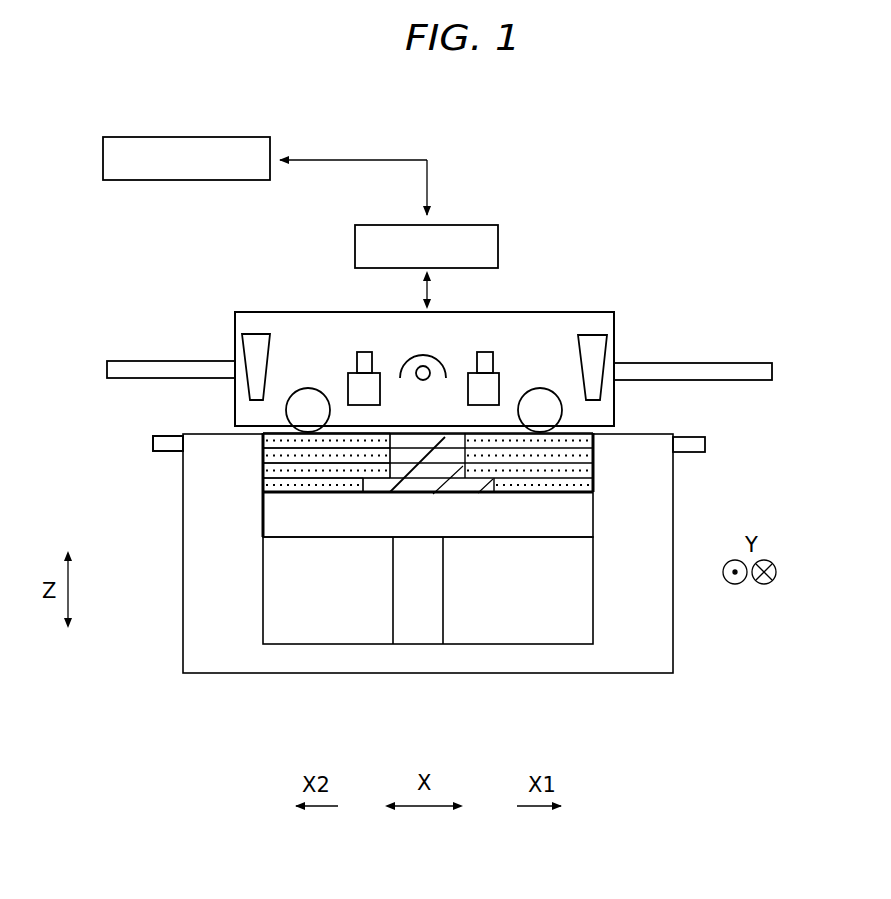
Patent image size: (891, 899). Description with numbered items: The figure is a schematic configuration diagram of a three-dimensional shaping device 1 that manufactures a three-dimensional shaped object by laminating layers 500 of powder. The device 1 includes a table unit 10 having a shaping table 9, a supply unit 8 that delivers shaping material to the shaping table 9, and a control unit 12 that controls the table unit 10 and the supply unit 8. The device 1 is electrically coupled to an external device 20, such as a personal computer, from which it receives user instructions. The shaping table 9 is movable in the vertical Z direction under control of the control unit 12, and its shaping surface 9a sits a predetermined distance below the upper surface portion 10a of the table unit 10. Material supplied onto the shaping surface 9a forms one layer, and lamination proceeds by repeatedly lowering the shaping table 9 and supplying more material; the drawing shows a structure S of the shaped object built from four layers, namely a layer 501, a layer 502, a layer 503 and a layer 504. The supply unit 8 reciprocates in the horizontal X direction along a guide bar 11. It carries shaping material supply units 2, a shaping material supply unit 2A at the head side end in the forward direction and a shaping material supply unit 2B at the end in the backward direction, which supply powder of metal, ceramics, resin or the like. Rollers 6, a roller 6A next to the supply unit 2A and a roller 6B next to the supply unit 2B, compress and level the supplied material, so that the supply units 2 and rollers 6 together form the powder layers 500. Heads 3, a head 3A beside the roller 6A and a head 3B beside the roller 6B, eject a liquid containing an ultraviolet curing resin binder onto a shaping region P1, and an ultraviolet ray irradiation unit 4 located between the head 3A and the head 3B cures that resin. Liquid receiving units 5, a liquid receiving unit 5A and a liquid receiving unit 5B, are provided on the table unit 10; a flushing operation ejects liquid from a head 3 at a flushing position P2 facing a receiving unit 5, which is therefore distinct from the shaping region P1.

The three-dimensional shaping device 1 is at (805, 305).
The external device 20 is at (150, 137).
The control unit 12 is at (483, 225).
The supply unit 8 is at (235, 322).
The guide bar 11 is at (712, 363).
The shaping material supply units 2 is at (422, 334).
The shaping material supply unit 2A is at (600, 335).
The shaping material supply unit 2B is at (250, 334).
The rollers 6 is at (422, 350).
The roller 6A is at (540, 388).
The roller 6B is at (308, 388).
The heads 3 is at (426, 340).
The head 3A is at (485, 352).
The head 3B is at (362, 352).
The ultraviolet ray irradiation unit 4 is at (424, 356).
The liquid receiving units 5 is at (431, 406).
The liquid receiving unit 5A is at (689, 437).
The liquid receiving unit 5B is at (168, 436).
The table unit 10 is at (183, 495).
The upper surface portion 10a is at (177, 436).
The shaping table 9 is at (298, 532).
The shaping surface 9a is at (298, 521).
The layers 500 is at (424, 483).
The layer 501 is at (282, 487).
The layer 502 is at (262, 470).
The layer 503 is at (262, 455).
The layer 504 is at (262, 437).
The structure S is at (343, 494).
The shaping region P1 is at (469, 498).
The flushing position P2 is at (182, 429).